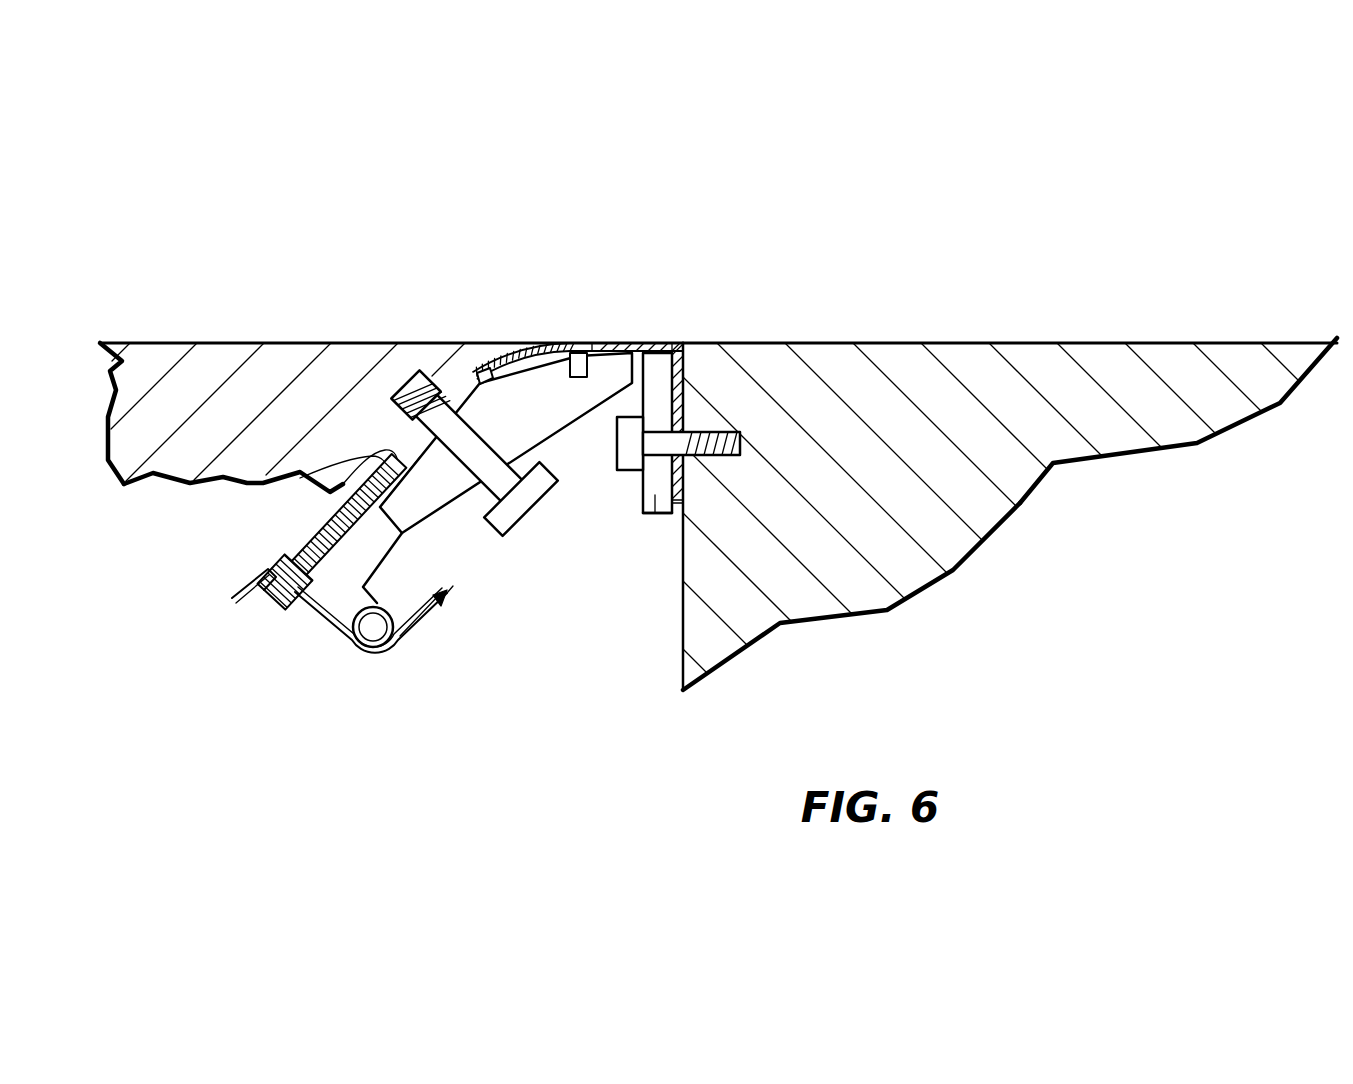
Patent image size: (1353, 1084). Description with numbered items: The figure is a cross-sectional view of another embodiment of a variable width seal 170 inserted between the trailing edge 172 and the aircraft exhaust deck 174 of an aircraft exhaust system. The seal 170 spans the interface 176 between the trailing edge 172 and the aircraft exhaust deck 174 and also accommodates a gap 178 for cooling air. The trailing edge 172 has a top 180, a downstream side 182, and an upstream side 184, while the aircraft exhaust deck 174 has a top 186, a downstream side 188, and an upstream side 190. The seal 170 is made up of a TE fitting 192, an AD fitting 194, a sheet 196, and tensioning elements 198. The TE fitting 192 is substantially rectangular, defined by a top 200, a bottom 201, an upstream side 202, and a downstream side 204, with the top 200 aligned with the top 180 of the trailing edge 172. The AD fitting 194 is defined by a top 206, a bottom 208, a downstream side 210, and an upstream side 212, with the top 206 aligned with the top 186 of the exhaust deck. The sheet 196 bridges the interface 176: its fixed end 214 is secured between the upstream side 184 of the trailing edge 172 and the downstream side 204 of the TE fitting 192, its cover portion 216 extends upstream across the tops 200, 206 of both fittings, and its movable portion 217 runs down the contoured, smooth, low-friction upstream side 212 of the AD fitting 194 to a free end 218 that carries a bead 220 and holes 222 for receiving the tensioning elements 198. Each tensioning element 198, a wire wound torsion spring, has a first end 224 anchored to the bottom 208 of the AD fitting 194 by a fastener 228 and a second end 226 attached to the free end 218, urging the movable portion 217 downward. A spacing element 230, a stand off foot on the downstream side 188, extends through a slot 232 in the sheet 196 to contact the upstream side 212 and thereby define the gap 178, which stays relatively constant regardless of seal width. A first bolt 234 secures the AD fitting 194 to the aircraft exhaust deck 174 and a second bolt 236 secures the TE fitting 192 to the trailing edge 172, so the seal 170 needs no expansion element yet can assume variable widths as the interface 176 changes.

The variable width seal 170 is at (752, 281).
The trailing edge 172 is at (955, 605).
The aircraft exhaust deck 174 is at (107, 505).
The interface 176 is at (683, 713).
The gap 178 is at (560, 340).
The top 180 is at (986, 343).
The downstream side 182 is at (1173, 431).
The upstream side 184 is at (687, 527).
The top 186 is at (173, 342).
The downstream side 188 is at (483, 370).
The upstream side 190 is at (143, 387).
The trailing edge (TE) fitting 192 is at (660, 546).
The aircraft exhaust deck (AD) fitting 194 is at (477, 605).
The sheet 196 is at (651, 336).
The tensioning elements 198 is at (355, 645).
The top 200 is at (663, 377).
The bottom 201 is at (653, 517).
The upstream side 202 is at (645, 510).
The downstream side 204 is at (690, 463).
The top 206 is at (592, 343).
The bottom 208 is at (423, 577).
The downstream side 210 is at (543, 437).
The upstream side 212 is at (461, 440).
The fixed end 214 is at (683, 420).
The cover portion 216 is at (617, 343).
The movable portion 217 is at (362, 491).
The free end 218 is at (315, 549).
The bead 220 is at (297, 603).
The holes 222 is at (233, 597).
The first end 224 is at (420, 618).
The second end 226 is at (323, 617).
The fastener 228 is at (441, 612).
The spacing element 230 is at (410, 437).
The slot 232 is at (285, 492).
The first bolt 234 is at (540, 503).
The second bolt 236 is at (613, 447).